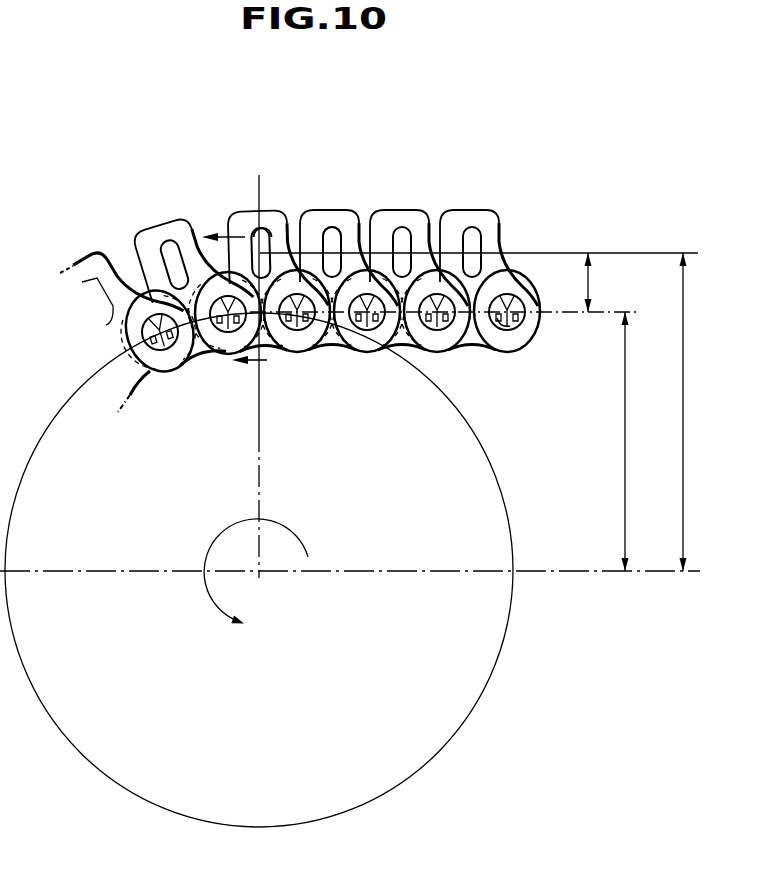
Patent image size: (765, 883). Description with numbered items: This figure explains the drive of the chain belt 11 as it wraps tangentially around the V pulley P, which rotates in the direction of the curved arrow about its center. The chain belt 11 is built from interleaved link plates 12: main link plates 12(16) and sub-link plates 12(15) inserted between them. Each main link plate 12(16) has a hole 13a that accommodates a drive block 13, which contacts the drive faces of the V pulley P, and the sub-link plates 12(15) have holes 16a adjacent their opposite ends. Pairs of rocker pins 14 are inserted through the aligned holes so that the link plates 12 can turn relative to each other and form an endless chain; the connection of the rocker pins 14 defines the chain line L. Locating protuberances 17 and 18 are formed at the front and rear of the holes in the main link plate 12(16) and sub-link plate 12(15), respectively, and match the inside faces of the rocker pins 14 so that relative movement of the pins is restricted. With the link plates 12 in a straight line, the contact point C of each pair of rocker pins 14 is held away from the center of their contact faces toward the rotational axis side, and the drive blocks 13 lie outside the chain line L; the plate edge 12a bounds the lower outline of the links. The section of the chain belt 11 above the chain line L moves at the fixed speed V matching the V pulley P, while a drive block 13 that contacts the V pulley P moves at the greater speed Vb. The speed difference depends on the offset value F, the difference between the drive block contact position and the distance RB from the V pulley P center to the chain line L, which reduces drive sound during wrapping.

The chain belt 11 is at (522, 124).
The link plates 12 is at (300, 293).
The sub-link plate 15 is at (145, 240).
The main link plate 16 is at (430, 350).
The link plate edge 12a is at (512, 357).
The drive block 13 is at (173, 247).
The hole 13a is at (263, 227).
The rocker pin 14 is at (372, 300).
The hole 16a is at (178, 343).
The locating protuberance 17 is at (513, 323).
The locating protuberance 18 is at (138, 287).
The contact point C is at (120, 335).
The offset value F is at (594, 282).
The chain line L is at (613, 307).
The V pulley P is at (474, 705).
The distance from V pulley center to chain line RB is at (483, 412).
The chain line speed V is at (249, 370).
The drive block speed Vb is at (221, 229).